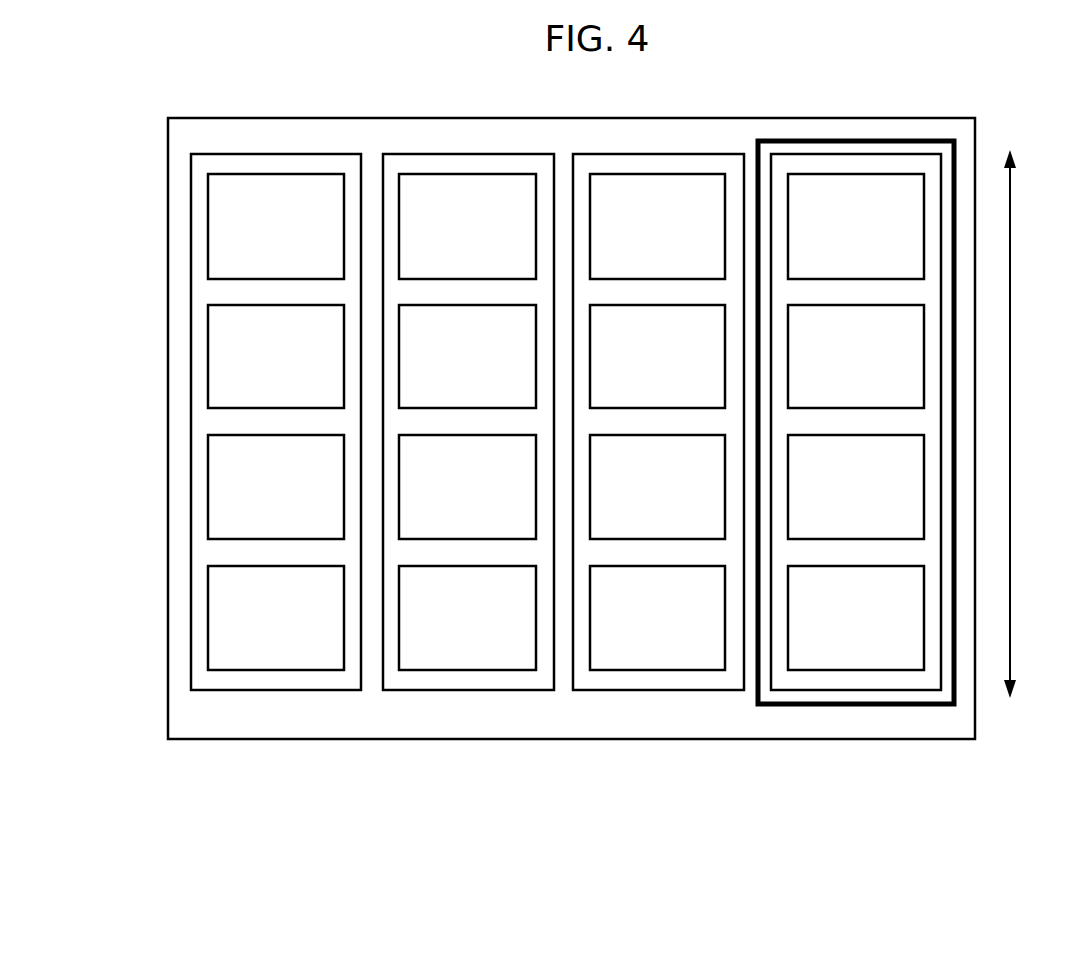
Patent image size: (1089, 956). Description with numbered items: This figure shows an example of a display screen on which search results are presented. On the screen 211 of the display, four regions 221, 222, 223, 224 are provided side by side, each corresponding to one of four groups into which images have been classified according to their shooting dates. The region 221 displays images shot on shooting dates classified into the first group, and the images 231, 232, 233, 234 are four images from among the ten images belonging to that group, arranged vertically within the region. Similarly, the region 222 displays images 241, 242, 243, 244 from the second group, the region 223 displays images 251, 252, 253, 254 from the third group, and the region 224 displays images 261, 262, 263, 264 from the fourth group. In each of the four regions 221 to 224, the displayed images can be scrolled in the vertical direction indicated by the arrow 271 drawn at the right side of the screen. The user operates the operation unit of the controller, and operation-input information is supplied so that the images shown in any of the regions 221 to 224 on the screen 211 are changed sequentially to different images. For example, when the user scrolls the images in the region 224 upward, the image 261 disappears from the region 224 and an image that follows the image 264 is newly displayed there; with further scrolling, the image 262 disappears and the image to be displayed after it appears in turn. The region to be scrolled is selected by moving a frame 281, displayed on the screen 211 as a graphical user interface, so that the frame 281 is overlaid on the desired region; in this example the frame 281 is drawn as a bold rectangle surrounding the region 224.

The screen 211 is at (214, 118).
The region 221 is at (272, 690).
The region 222 is at (407, 690).
The region 223 is at (598, 690).
The region 224 is at (797, 690).
The image 231 is at (208, 228).
The image 232 is at (208, 357).
The image 233 is at (208, 487).
The image 234 is at (208, 617).
The image 241 is at (510, 175).
The image 242 is at (427, 305).
The image 243 is at (509, 540).
The image 244 is at (460, 671).
The image 251 is at (700, 175).
The image 252 is at (619, 305).
The image 253 is at (697, 540).
The image 254 is at (650, 671).
The image 261 is at (893, 175).
The image 262 is at (811, 305).
The image 263 is at (903, 540).
The image 264 is at (852, 671).
The arrow 271 is at (1010, 632).
The frame 281 is at (937, 141).